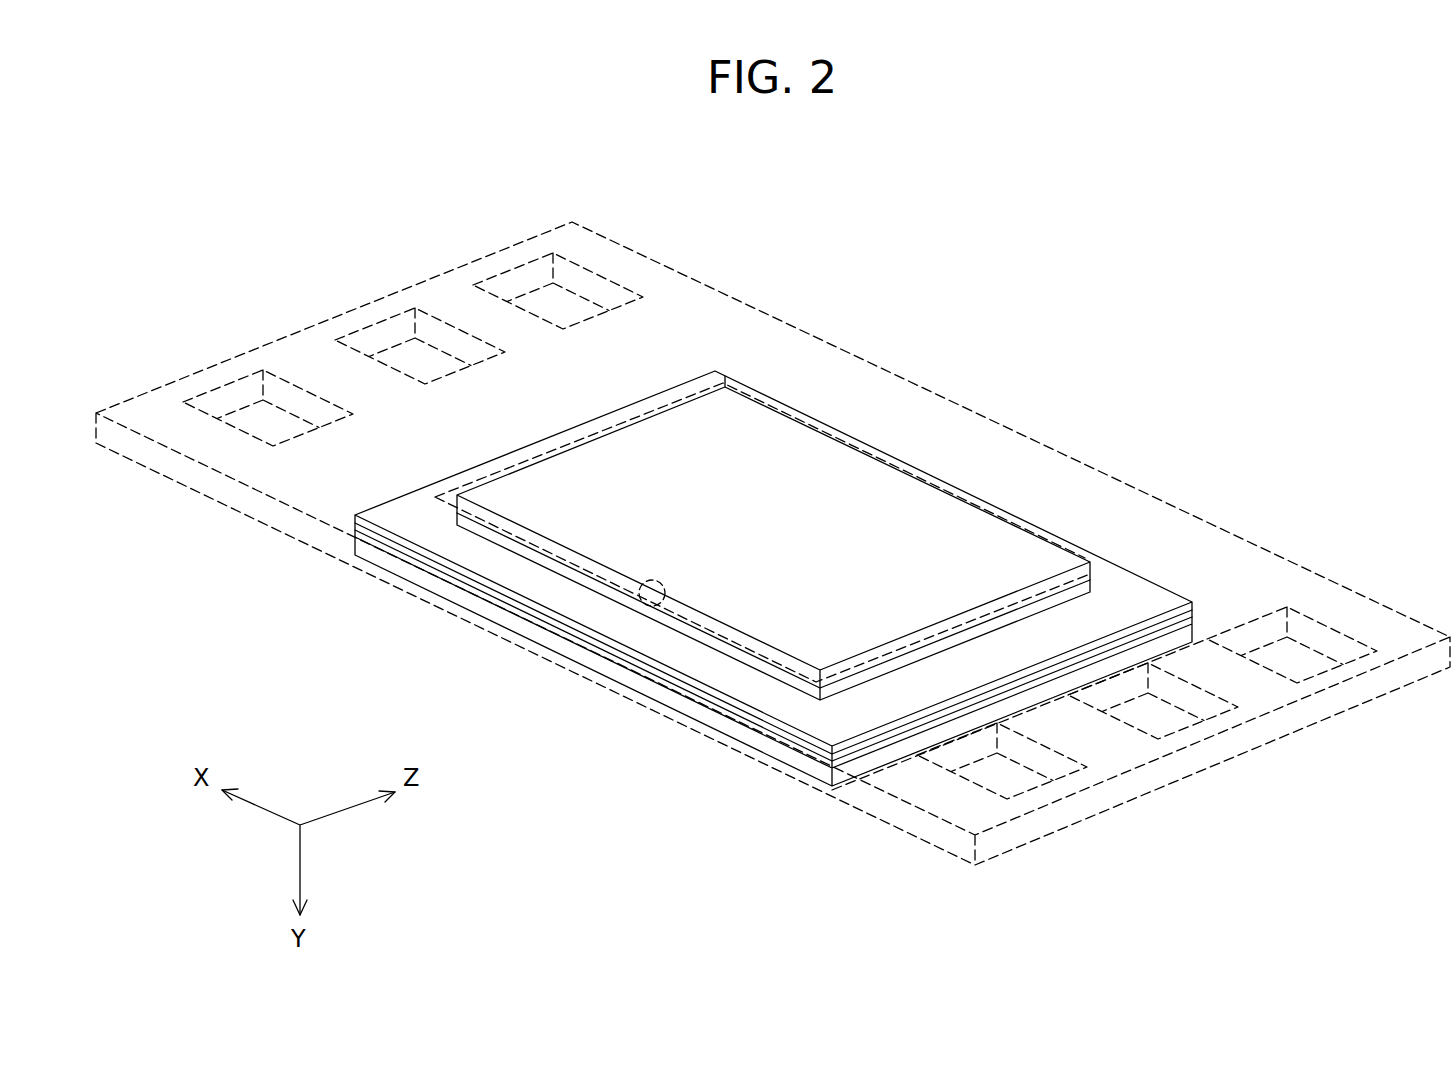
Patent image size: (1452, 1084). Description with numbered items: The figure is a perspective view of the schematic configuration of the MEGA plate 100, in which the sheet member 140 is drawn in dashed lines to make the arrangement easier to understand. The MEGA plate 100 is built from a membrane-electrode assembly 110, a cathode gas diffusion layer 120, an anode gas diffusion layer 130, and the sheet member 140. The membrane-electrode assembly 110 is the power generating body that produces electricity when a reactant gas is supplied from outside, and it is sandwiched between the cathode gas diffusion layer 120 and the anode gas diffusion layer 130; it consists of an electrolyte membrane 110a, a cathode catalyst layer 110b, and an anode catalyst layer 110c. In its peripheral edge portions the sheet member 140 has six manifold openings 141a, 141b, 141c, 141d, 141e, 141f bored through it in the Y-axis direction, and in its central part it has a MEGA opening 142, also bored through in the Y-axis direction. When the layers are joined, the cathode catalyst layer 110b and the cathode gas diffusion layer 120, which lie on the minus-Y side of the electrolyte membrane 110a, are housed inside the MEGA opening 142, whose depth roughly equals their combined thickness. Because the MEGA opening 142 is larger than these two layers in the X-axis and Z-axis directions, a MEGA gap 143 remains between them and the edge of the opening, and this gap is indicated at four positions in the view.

The MEGA plate 100 is at (1324, 301).
The membrane-electrode assembly 110 is at (870, 674).
The electrolyte membrane 110a is at (1155, 600).
The cathode catalyst layer 110b is at (565, 572).
The anode catalyst layer 110c is at (718, 703).
The cathode gas diffusion layer 120 is at (785, 450).
The anode gas diffusion layer 130 is at (368, 558).
The sheet member 140 is at (1128, 755).
The manifold opening 141a is at (1290, 655).
The manifold opening 141b is at (257, 413).
The manifold opening 141c is at (1003, 780).
The manifold opening 141d is at (565, 305).
The manifold opening 141e is at (1167, 717).
The manifold opening 141f is at (410, 357).
The MEGA opening 142 is at (515, 545).
The MEGA gap 143 is at (690, 367).